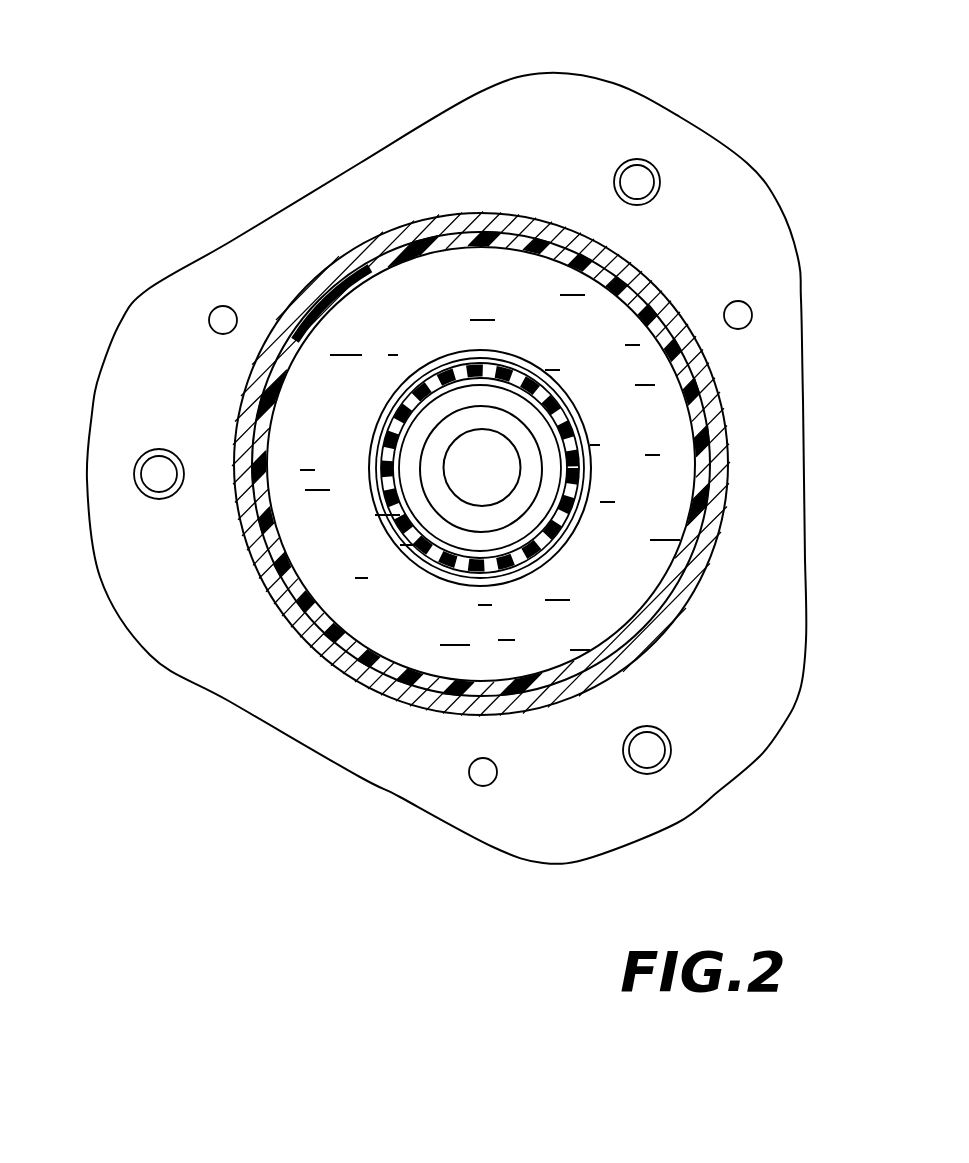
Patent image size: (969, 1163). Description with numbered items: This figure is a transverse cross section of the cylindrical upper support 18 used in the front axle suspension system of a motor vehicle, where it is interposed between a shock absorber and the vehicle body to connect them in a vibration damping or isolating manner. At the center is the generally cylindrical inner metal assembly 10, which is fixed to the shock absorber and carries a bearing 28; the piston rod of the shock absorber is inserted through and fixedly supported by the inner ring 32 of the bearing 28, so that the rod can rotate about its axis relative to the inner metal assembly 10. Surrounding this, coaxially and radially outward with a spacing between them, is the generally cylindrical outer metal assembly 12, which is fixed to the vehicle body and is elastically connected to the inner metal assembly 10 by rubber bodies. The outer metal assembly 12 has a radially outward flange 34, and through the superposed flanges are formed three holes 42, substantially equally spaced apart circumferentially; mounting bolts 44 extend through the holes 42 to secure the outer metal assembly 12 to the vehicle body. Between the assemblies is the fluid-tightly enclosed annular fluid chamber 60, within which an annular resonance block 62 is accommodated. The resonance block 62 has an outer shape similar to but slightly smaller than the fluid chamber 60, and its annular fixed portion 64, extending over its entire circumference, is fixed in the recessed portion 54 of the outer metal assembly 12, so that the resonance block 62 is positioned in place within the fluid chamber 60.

The upper support 18 is at (266, 102).
The radially outward flange 34 is at (203, 668).
The holes 42 is at (157, 492).
The mounting bolts 44 is at (157, 460).
The annular fixed portion 64 is at (703, 371).
The recessed portion 54 is at (710, 445).
The resonance block 62 is at (688, 601).
The outer metal assembly 12 is at (708, 537).
The fluid chamber 60 is at (620, 357).
The inner metal assembly 10 is at (422, 543).
The inner ring 32 is at (470, 417).
The bearing 28 is at (458, 480).